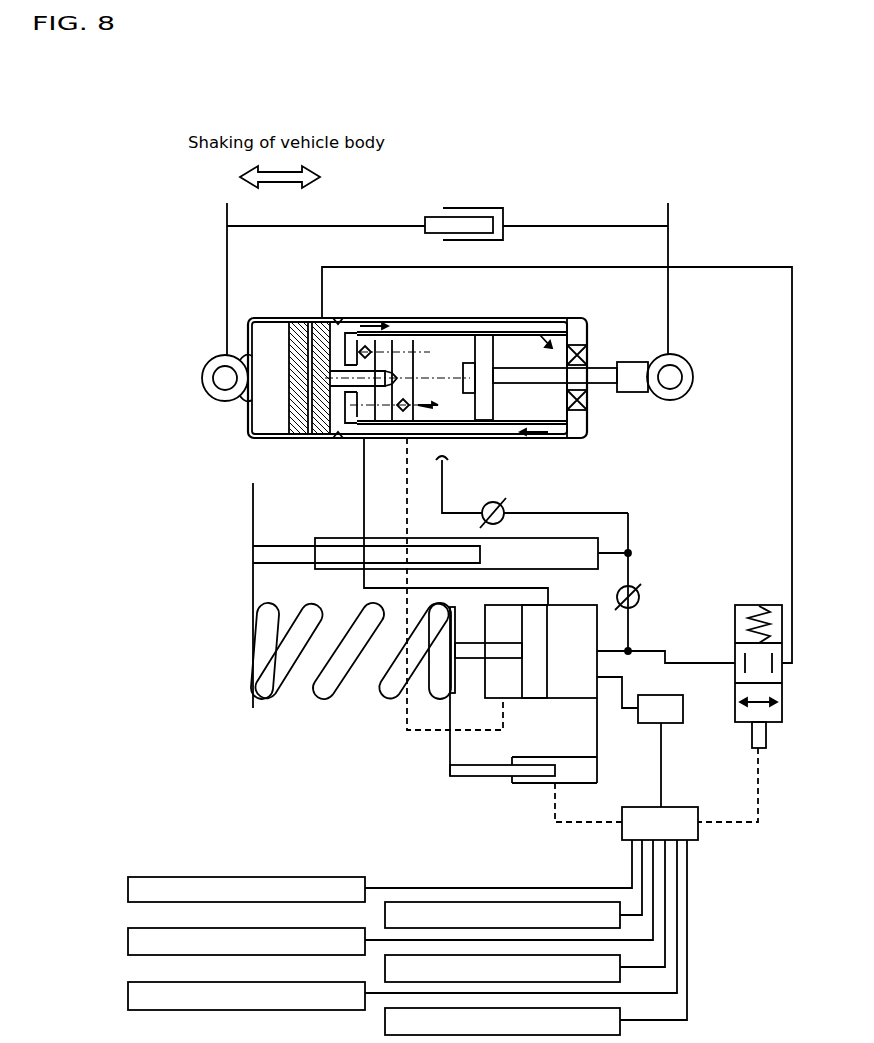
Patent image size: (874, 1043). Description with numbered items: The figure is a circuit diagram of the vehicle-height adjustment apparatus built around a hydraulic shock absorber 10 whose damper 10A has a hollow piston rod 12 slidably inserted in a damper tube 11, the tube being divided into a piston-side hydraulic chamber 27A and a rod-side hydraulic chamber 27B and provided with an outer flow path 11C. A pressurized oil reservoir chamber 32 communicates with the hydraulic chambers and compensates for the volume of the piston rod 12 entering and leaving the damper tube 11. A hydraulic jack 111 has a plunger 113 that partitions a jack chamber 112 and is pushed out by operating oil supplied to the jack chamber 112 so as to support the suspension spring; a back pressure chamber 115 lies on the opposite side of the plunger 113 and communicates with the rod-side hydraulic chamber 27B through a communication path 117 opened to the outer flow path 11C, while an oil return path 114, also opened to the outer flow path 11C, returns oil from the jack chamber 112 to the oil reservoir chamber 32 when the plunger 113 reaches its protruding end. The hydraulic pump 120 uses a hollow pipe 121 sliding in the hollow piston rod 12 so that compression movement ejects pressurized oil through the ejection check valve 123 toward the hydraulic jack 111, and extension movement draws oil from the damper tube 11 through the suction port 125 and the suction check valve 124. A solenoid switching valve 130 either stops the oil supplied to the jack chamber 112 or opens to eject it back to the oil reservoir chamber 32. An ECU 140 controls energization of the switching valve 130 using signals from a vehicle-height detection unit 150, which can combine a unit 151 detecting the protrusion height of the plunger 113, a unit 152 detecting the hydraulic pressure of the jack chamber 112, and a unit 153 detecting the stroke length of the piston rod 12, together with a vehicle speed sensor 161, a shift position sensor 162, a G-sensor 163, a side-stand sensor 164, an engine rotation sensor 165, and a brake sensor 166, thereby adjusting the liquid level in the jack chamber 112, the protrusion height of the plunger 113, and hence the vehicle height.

The hydraulic shock absorber 10 is at (198, 302).
The damper 10A is at (247, 423).
The damper tube 11 is at (283, 438).
The outer flow path 11C is at (375, 438).
The piston rod 12 is at (603, 392).
The piston-side hydraulic chamber 27A is at (445, 345).
The rod-side hydraulic chamber 27B is at (522, 340).
The oil reservoir chamber 32 is at (308, 320).
The hydraulic jack 111 is at (550, 699).
The jack chamber 112 is at (578, 688).
The plunger 113 is at (531, 686).
The oil return path 114 is at (363, 590).
The back pressure chamber 115 is at (494, 676).
The communication path 117 is at (415, 733).
The hydraulic pump 120 is at (333, 538).
The hollow pipe 121 is at (282, 546).
The ejection check valve 123 is at (638, 594).
The suction check valve 124 is at (502, 506).
The suction port 125 is at (444, 478).
The solenoid switching valve 130 is at (775, 724).
The ECU 140 is at (700, 838).
The vehicle-height detection unit 150 is at (522, 784).
The plunger protrusion height detection unit 151 is at (537, 784).
The jack chamber hydraulic pressure detection unit 152 is at (672, 724).
The stroke length detection unit 153 is at (470, 208).
The vehicle speed sensor 161 is at (380, 871).
The shift position sensor 162 is at (513, 884).
The G-sensor 163 is at (390, 897).
The side-stand sensor 164 is at (525, 911).
The engine rotation sensor 165 is at (402, 925).
The brake sensor 166 is at (536, 937).